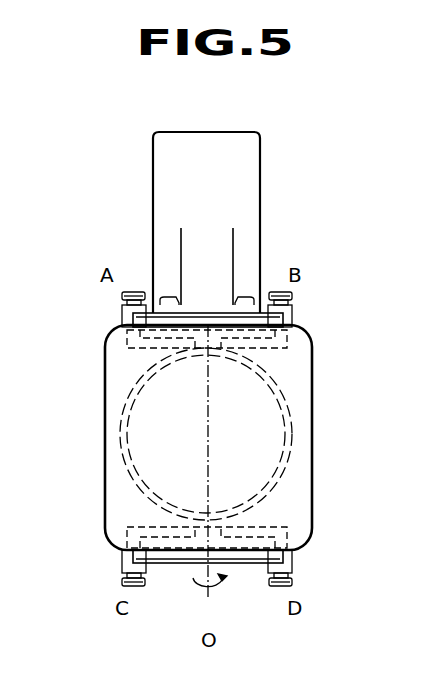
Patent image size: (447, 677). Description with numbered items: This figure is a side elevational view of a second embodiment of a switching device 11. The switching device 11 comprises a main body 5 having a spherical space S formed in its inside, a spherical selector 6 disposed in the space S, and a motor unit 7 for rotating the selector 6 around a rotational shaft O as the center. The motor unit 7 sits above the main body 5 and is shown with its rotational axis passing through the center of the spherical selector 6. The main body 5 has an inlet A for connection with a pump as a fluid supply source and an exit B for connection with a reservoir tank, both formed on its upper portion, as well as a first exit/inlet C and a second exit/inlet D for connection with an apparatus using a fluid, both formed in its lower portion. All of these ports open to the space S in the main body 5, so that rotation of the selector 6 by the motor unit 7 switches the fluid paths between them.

The main body 5 is at (313, 505).
The spherical selector 6 is at (288, 431).
The motor unit 7 is at (259, 200).
The switching device 11 is at (333, 318).
The spherical space S is at (124, 461).